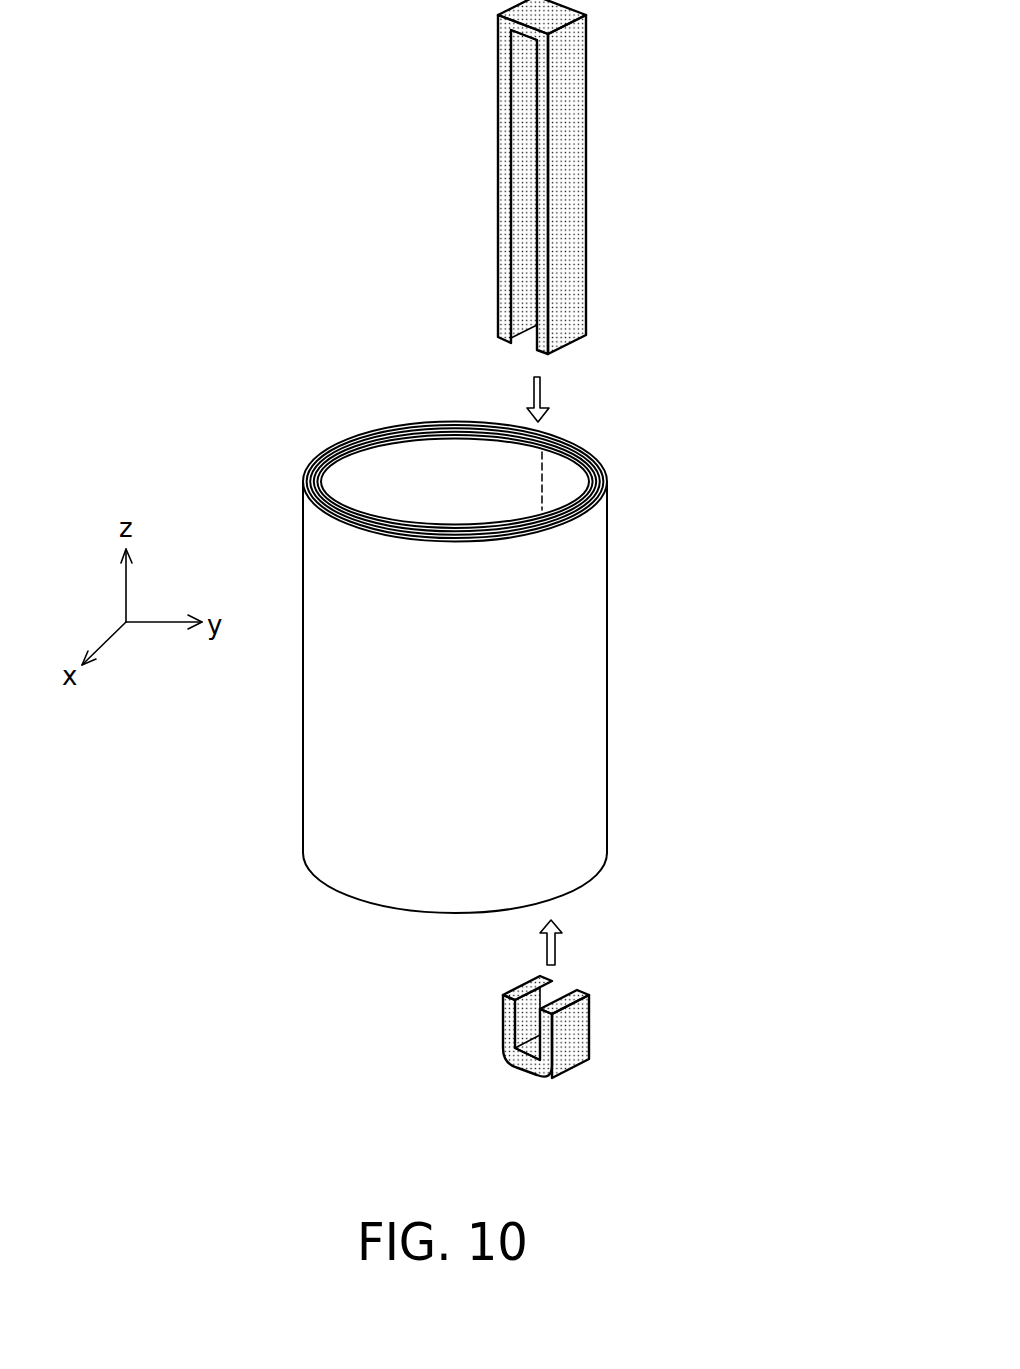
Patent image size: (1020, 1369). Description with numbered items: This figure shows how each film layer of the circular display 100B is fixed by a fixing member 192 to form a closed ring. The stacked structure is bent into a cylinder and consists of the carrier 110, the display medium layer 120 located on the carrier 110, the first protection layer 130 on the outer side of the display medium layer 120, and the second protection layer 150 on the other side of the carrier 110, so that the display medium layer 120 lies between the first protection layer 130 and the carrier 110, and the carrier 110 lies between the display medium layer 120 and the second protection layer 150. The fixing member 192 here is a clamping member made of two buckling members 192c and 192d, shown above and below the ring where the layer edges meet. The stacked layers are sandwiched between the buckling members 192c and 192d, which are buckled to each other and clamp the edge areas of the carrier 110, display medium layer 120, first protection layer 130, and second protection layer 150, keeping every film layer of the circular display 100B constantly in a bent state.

The circular display 100B is at (499, 756).
The carrier 110 is at (333, 458).
The display medium layer 120 is at (347, 448).
The first protection layer 130 is at (360, 432).
The second protection layer 150 is at (322, 483).
The fixing member 192 is at (638, 539).
The buckling member 192c is at (572, 105).
The buckling member 192d is at (575, 1020).